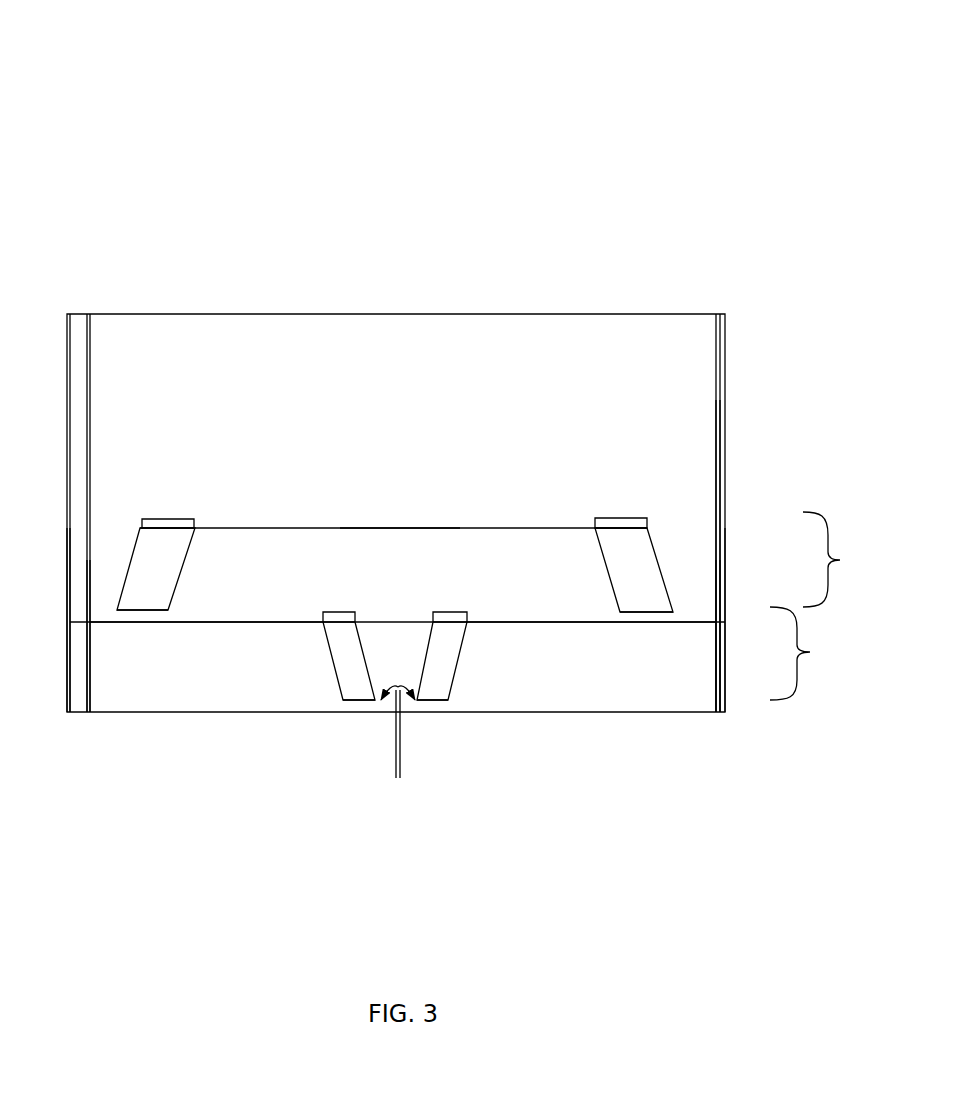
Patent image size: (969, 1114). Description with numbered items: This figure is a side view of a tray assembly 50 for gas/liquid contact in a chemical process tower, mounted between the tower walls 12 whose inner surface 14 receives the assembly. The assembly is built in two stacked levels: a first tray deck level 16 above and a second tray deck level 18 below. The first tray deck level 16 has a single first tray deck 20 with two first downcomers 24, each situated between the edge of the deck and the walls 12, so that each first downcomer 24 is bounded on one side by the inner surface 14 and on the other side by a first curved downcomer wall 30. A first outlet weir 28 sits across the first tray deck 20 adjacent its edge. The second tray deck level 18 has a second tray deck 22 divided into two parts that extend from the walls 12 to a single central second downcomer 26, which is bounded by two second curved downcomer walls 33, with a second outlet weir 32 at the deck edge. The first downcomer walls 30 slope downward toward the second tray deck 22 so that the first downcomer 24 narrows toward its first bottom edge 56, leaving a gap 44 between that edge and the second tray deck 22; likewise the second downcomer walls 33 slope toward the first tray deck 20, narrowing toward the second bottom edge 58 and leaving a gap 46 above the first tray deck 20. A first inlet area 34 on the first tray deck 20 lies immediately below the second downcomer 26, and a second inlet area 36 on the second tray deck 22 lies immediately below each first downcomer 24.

The tray assembly 50 is at (200, 162).
The walls 12 is at (68, 398).
The inner surface 14 is at (87, 383).
The first tray deck level 16 is at (840, 560).
The second tray deck level 18 is at (810, 652).
The first tray deck 20 is at (348, 528).
The second tray deck 22 is at (233, 624).
The first downcomer 24 is at (100, 577).
The second downcomer 26 is at (397, 622).
The first outlet weir 28 is at (167, 523).
The first curved downcomer wall 30 is at (137, 557).
The second outlet weir 32 is at (350, 622).
The second curved downcomer wall 33 is at (363, 670).
The first inlet area 34 is at (397, 528).
The second inlet area 36 is at (99, 622).
The gap 44 is at (170, 618).
The gap 46 is at (390, 748).
The first bottom edge 56 is at (687, 597).
The second bottom edge 58 is at (430, 703).